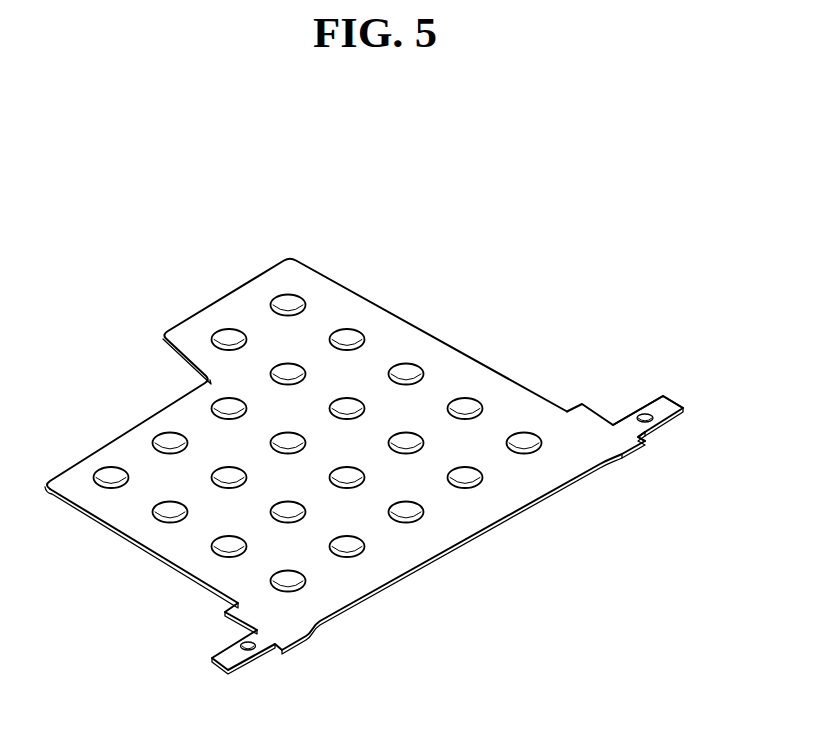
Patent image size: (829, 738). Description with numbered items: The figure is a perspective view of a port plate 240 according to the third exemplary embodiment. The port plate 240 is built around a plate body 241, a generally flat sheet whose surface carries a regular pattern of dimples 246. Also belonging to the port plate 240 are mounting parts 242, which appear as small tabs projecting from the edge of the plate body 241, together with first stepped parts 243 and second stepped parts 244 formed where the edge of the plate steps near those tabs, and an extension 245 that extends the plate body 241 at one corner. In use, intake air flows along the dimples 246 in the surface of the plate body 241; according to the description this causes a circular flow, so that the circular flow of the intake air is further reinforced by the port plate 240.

The port plate 240 is at (655, 226).
The plate body 241 is at (127, 512).
The mounting parts 242 is at (223, 658).
The first stepped parts 243 is at (585, 413).
The second stepped parts 244 is at (645, 443).
The extension 245 is at (242, 300).
The dimples 246 is at (347, 338).